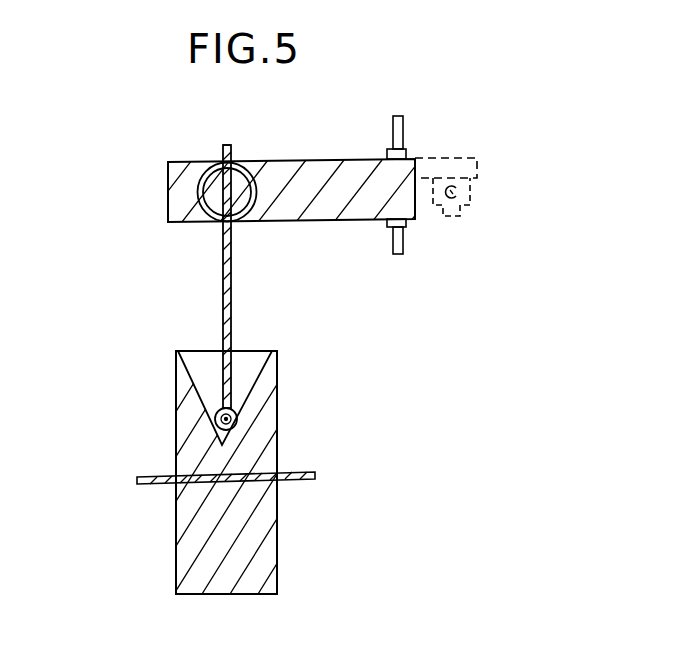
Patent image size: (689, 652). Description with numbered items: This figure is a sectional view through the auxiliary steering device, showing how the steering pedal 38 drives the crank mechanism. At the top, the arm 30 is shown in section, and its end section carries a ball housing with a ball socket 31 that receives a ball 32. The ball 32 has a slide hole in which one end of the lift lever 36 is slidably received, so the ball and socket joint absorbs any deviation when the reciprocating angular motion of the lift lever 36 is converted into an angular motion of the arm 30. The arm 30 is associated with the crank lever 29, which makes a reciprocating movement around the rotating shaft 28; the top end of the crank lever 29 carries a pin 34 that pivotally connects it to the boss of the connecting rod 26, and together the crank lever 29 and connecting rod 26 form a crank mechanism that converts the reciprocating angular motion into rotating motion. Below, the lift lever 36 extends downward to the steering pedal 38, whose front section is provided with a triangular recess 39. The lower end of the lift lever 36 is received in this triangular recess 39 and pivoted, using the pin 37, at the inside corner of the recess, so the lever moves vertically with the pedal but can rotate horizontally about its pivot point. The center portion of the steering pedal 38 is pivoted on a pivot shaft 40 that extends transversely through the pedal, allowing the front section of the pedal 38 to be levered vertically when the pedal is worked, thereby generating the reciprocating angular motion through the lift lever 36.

The connecting rod 26 is at (465, 188).
The rotating shaft 28 is at (398, 138).
The crank lever 29 is at (477, 158).
The arm 30 is at (347, 159).
The ball socket 31 is at (223, 157).
The ball 32 is at (191, 219).
The pin 34 is at (466, 190).
The lift lever 36 is at (232, 247).
The pin 37 is at (238, 404).
The steering pedal 38 is at (288, 548).
The triangular recess 39 is at (247, 360).
The pivot shaft 40 is at (315, 474).